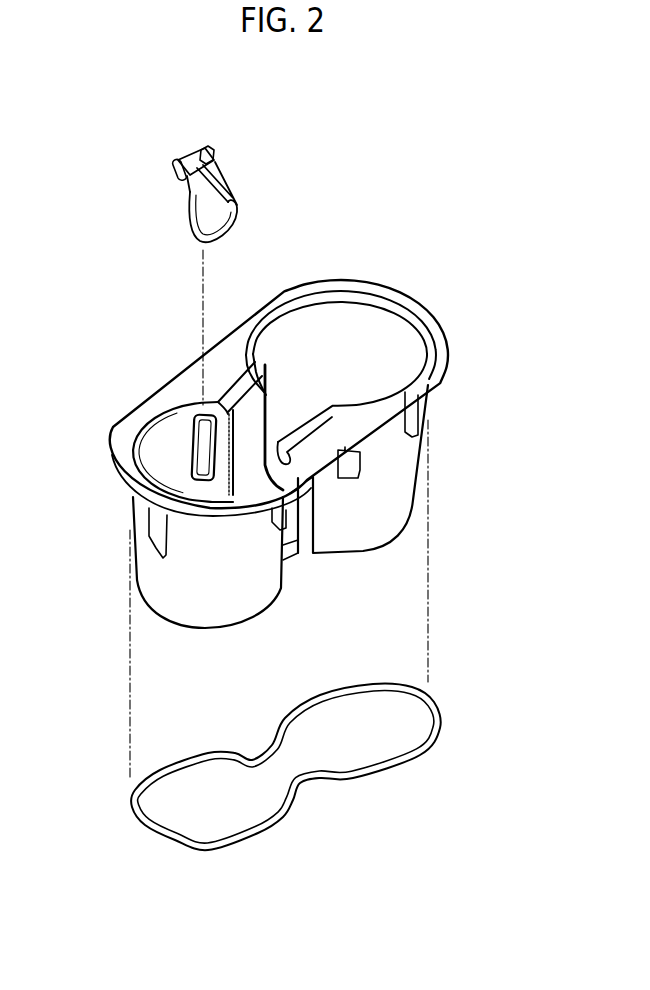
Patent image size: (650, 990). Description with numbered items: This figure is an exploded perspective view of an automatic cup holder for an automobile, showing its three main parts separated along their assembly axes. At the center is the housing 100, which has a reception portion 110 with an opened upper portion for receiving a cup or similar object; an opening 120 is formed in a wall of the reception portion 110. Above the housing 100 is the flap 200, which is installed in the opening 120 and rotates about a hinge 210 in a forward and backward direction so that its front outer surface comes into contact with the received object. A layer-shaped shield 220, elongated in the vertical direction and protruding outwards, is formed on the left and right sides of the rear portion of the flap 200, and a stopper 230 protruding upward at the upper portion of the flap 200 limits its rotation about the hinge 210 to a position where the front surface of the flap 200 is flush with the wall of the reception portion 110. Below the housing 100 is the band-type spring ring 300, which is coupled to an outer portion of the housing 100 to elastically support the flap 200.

The housing 100 is at (281, 454).
The reception portion 110 is at (393, 337).
The opening 120 is at (202, 441).
The flap 200 is at (211, 163).
The hinge 210 is at (205, 145).
The shield 220 is at (190, 208).
The stopper 230 is at (180, 155).
The spring ring 300 is at (437, 743).